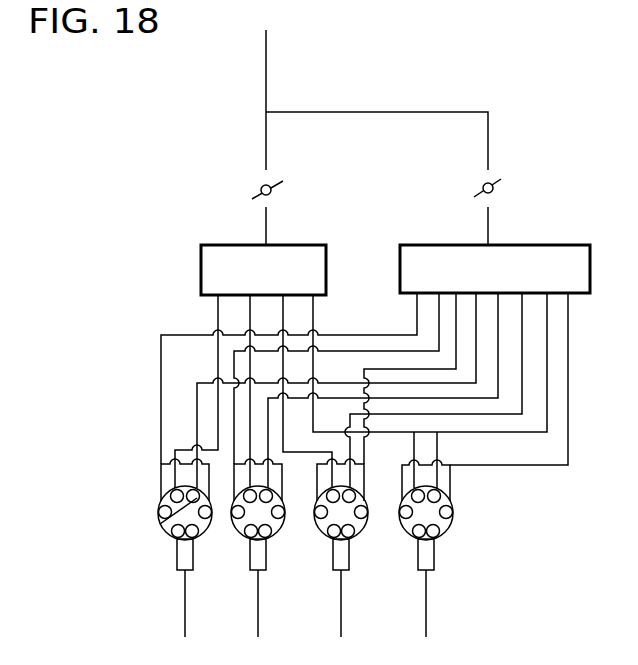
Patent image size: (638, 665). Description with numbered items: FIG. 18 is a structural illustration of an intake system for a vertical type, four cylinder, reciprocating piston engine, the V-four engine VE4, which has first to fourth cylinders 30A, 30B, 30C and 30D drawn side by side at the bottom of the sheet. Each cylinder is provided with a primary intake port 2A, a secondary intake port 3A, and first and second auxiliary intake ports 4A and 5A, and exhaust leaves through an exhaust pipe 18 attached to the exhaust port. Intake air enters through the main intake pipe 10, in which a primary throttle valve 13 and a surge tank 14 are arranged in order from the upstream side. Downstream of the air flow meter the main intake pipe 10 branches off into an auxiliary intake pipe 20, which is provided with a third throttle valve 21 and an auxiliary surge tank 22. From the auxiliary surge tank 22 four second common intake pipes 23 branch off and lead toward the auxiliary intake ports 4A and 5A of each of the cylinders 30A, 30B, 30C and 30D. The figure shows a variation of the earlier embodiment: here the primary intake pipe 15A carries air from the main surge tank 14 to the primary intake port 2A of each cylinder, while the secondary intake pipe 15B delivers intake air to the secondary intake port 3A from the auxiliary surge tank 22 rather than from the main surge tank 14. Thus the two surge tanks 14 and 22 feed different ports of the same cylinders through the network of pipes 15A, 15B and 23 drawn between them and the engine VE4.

The main intake pipe 10 is at (266, 72).
The auxiliary intake pipe 20 is at (416, 112).
The primary throttle valve 13 is at (254, 197).
The third throttle valve 21 is at (495, 182).
The surge tank 14 is at (201, 263).
The auxiliary surge tank 22 is at (422, 245).
The second common intake pipe 23 is at (358, 326).
The primary intake pipe 15A is at (218, 345).
The secondary intake pipe 15B is at (197, 400).
The primary intake port 2A is at (164, 482).
The first auxiliary intake port 4A is at (158, 512).
The secondary intake port 3A is at (160, 524).
The second auxiliary intake port 5A is at (177, 557).
The exhaust pipe 18 is at (185, 606).
The first cylinder 30A is at (166, 535).
The second cylinder 30B is at (278, 547).
The third cylinder 30C is at (358, 547).
The fourth cylinder 30D is at (457, 547).
The V-4 engine VE4 is at (482, 548).